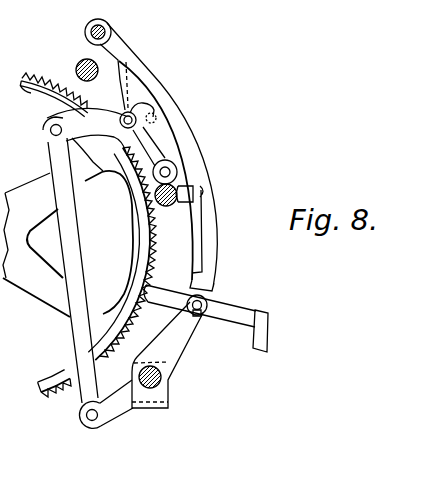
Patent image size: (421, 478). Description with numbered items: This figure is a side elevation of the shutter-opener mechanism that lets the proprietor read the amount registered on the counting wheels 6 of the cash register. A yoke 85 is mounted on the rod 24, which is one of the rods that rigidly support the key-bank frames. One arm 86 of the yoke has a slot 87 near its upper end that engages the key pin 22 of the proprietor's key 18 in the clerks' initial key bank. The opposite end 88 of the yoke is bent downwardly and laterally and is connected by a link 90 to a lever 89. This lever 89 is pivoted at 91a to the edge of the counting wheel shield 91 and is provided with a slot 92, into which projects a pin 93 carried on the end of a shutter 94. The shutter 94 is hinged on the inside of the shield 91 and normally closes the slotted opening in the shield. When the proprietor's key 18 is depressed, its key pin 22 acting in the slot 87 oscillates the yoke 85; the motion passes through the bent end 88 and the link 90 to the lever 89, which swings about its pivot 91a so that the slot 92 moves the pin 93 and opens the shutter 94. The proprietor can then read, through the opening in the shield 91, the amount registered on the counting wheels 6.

The counting wheels 6 is at (30, 75).
The proprietor's key 18 is at (258, 308).
The key pin 22 is at (207, 303).
The rod 24 is at (162, 378).
The yoke 85 is at (153, 397).
The arm of yoke 86 is at (168, 334).
The slot 87 is at (198, 318).
The end of yoke 88 is at (109, 410).
The lever 89 is at (84, 130).
The link 90 is at (73, 236).
The counting wheel shield 91 is at (207, 221).
The pivot 91a is at (177, 168).
The slot 92 is at (131, 131).
The pin 93 is at (90, 138).
The shutter 94 is at (147, 112).